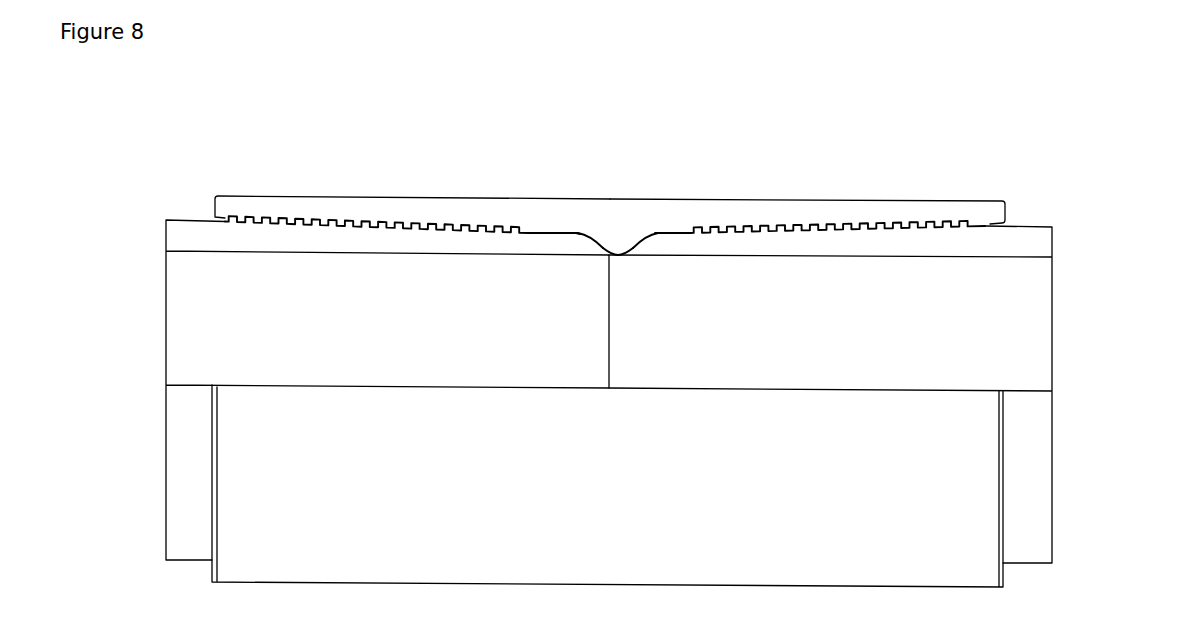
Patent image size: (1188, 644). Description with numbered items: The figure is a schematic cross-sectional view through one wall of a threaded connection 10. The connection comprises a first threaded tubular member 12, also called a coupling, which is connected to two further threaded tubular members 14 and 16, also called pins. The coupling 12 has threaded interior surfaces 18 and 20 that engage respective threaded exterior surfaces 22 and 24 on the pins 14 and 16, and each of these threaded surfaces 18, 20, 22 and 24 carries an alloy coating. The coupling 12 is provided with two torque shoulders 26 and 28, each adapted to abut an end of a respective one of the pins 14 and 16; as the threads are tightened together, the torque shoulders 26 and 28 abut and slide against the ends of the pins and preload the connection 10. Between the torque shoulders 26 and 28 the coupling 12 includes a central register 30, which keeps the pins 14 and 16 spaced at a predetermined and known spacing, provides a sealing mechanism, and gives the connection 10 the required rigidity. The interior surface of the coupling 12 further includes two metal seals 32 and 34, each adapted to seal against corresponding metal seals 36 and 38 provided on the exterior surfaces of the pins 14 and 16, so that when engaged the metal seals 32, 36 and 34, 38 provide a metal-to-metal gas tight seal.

The threaded connection 10 is at (616, 154).
The first threaded tubular member 12 is at (762, 214).
The threaded tubular member 14 is at (213, 231).
The threaded tubular member 16 is at (1016, 245).
The threaded interior surface 18 is at (270, 218).
The threaded interior surface 20 is at (786, 225).
The threaded exterior surface 22 is at (309, 227).
The threaded exterior surface 24 is at (825, 230).
The torque shoulder 26 is at (575, 249).
The torque shoulder 28 is at (649, 249).
The central register 30 is at (619, 258).
The metal seal 32 is at (573, 235).
The metal seal 34 is at (648, 235).
The metal seal 36 is at (650, 242).
The metal seal 38 is at (586, 242).